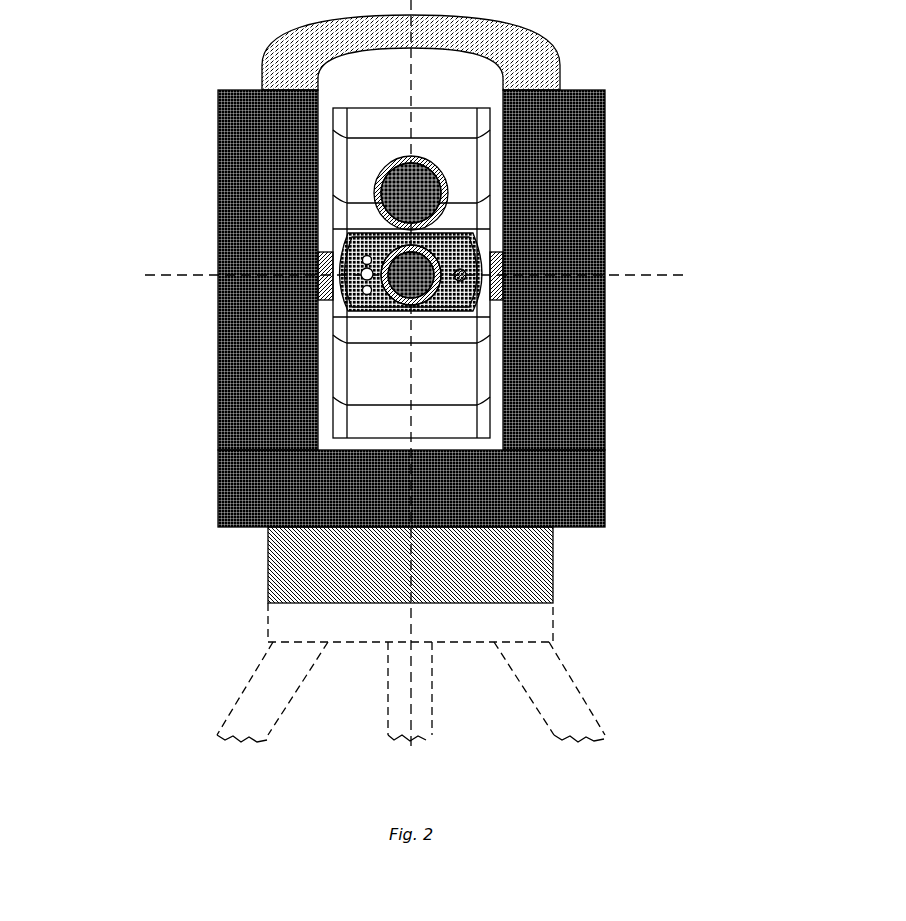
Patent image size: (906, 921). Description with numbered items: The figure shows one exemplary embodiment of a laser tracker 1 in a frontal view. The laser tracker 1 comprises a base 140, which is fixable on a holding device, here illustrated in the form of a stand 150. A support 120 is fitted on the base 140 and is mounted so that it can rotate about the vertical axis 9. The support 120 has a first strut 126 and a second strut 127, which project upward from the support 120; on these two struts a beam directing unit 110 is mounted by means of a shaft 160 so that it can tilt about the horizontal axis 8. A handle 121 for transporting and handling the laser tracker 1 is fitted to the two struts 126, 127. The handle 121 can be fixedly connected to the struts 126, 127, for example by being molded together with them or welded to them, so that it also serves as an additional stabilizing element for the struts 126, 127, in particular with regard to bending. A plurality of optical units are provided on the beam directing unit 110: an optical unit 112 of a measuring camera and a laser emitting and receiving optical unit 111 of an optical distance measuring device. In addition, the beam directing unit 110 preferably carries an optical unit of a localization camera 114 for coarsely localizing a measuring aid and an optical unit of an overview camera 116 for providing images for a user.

The laser tracker 1 is at (182, 70).
The horizontal axis 8 is at (627, 275).
The vertical axis 9 is at (410, 483).
The beam directing unit 110 is at (363, 152).
The laser emitting and receiving optical unit 111 is at (402, 283).
The optical unit of a measuring camera 112 is at (400, 196).
The optical unit of a localization camera 114 is at (362, 274).
The optical unit of an overview camera 116 is at (466, 283).
The support 120 is at (535, 490).
The handle 121 is at (535, 60).
The first strut 126 is at (245, 162).
The second strut 127 is at (572, 160).
The base 140 is at (535, 573).
The stand 150 is at (278, 630).
The shaft 160 is at (500, 258).